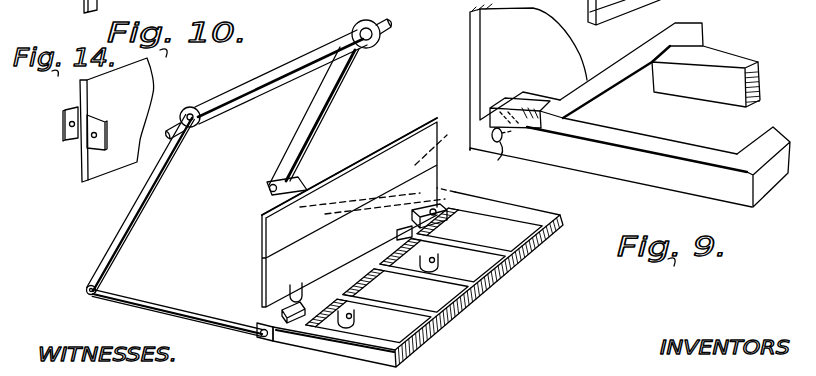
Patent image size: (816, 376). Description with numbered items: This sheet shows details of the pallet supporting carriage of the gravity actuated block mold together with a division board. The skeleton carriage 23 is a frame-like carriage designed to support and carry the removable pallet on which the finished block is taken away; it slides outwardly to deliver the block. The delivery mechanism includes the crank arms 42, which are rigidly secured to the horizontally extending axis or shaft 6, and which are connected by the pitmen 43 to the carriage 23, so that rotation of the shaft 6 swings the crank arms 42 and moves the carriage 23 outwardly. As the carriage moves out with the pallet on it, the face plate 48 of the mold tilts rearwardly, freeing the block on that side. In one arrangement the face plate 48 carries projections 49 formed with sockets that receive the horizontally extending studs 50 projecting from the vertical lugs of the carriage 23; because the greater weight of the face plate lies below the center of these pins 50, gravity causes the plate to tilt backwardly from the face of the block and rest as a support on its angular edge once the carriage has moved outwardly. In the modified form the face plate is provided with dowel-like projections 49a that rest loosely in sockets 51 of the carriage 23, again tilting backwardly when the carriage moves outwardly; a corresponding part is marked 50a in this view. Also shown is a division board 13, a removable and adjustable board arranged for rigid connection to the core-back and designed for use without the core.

In FIG. 10, the axis or shaft 6 is at (268, 78).
In FIG. 14, the division board 13 is at (108, 120).
In FIG. 10, the skeleton carriage 23 is at (533, 259).
In FIG. 9, the skeleton carriage 23 is at (675, 188).
In FIG. 10, the crank arm 42 is at (330, 95).
In FIG. 10, the pitman 43 is at (160, 300).
In FIG. 10, the face plate 48 is at (354, 200).
In FIG. 9, the face plate 48 is at (513, 78).
In FIG. 9, the projection 49 is at (515, 153).
In FIG. 10, the projection 49a is at (447, 199).
In FIG. 9, the stud 50 is at (494, 153).
In FIG. 10, the eye 50a is at (473, 213).
In FIG. 10, the socket 51 is at (305, 302).